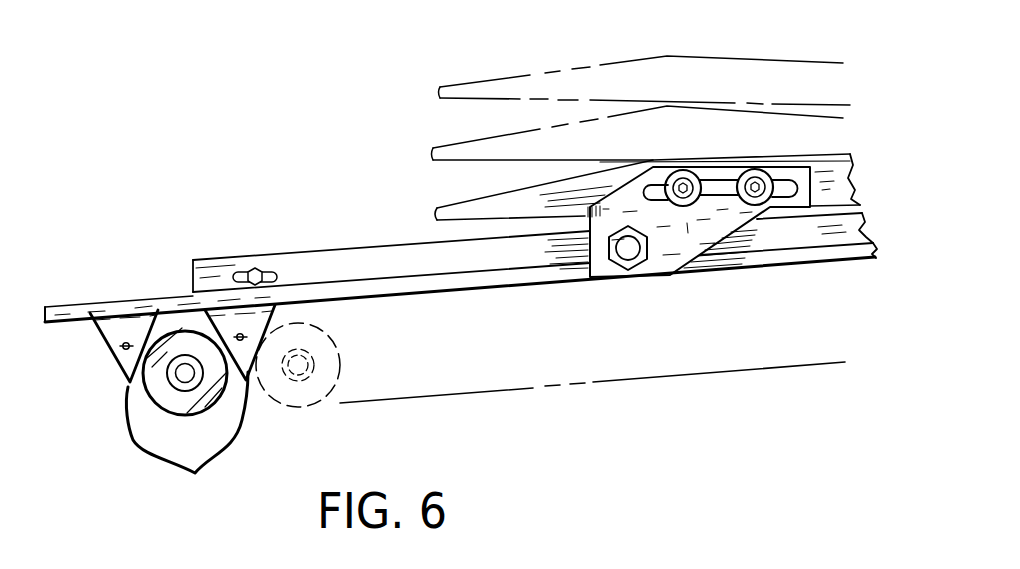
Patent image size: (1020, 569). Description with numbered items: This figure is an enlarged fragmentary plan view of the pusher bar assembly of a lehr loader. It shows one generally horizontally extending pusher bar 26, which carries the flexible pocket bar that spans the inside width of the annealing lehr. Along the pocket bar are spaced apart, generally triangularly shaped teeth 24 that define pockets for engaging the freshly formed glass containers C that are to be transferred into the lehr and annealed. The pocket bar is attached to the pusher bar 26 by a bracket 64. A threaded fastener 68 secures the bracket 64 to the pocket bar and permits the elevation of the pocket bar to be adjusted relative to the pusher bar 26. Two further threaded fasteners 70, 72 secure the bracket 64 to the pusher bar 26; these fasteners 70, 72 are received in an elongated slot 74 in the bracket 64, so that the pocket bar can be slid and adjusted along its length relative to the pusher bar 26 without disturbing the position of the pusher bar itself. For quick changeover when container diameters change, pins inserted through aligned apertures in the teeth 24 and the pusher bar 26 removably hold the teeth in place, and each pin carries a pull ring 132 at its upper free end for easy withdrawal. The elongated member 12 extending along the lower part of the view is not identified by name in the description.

The rail 12 is at (427, 287).
The teeth 24 is at (195, 474).
The pusher bar 26 is at (463, 210).
The bracket 64 is at (742, 233).
The threaded fastener 68 is at (633, 262).
The threaded fastener 70 is at (672, 173).
The threaded fastener 72 is at (750, 173).
The slot 74 is at (787, 190).
The pull ring 132 is at (128, 347).
The glass containers C is at (182, 416).